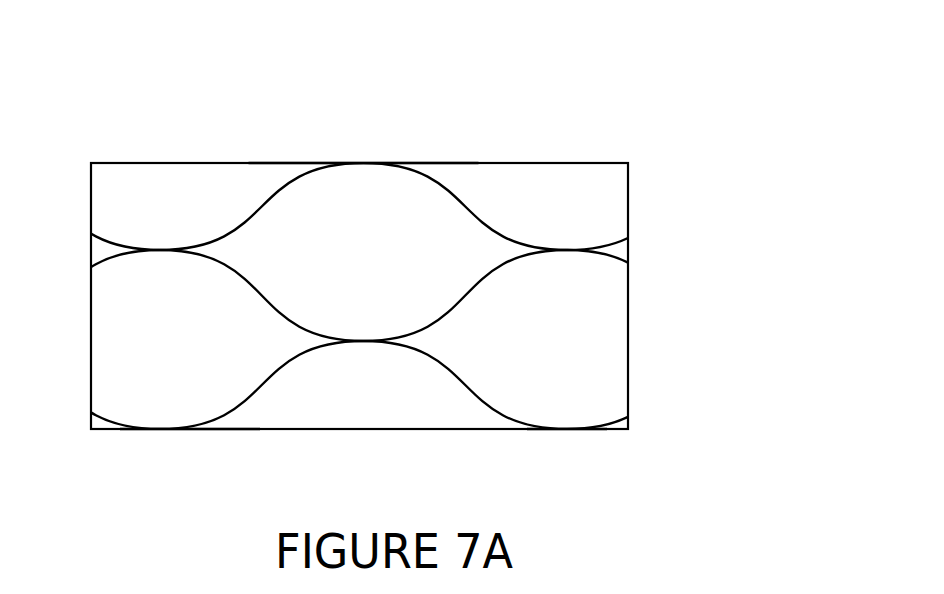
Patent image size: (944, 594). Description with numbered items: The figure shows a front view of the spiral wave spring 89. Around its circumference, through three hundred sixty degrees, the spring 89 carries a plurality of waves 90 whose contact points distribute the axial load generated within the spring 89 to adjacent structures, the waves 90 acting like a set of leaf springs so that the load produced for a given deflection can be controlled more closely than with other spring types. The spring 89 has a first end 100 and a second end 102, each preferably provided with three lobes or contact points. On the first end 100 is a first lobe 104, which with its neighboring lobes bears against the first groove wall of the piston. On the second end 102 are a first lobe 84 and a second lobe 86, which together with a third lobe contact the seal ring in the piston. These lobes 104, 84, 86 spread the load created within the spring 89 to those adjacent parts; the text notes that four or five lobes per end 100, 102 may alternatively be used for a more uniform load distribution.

The spiral wave spring 89 is at (603, 105).
The first end 100 is at (349, 70).
The first lobe 104 is at (372, 162).
The waves 90 is at (120, 370).
The first lobe 84 is at (126, 431).
The second lobe 86 is at (565, 432).
The second end 102 is at (228, 470).